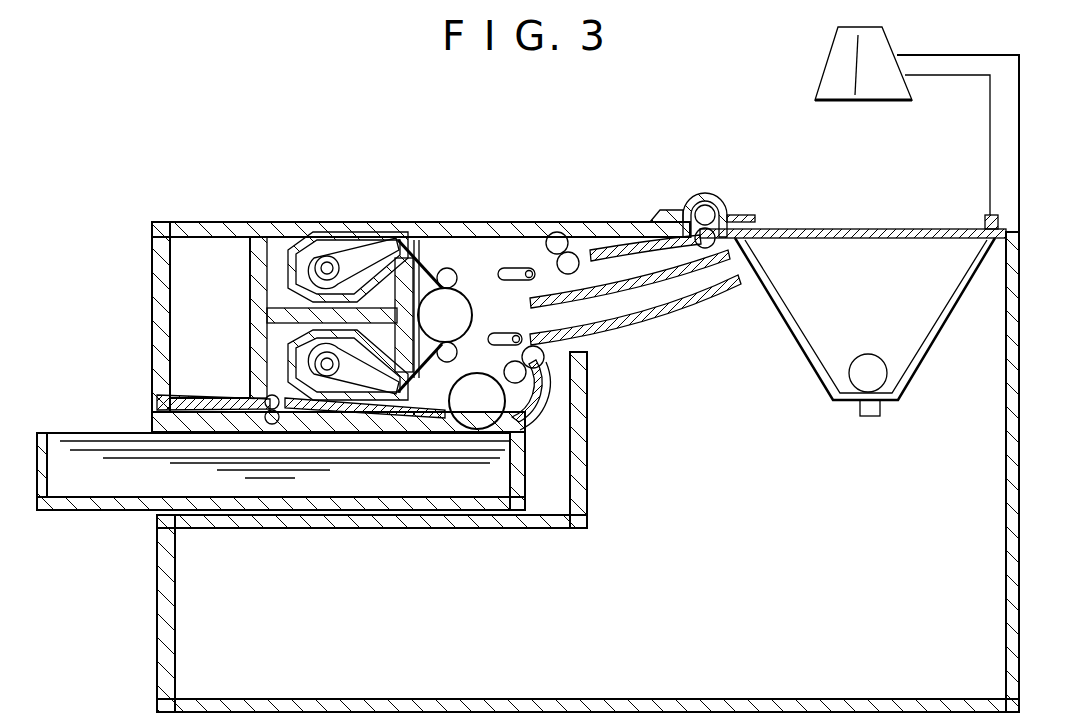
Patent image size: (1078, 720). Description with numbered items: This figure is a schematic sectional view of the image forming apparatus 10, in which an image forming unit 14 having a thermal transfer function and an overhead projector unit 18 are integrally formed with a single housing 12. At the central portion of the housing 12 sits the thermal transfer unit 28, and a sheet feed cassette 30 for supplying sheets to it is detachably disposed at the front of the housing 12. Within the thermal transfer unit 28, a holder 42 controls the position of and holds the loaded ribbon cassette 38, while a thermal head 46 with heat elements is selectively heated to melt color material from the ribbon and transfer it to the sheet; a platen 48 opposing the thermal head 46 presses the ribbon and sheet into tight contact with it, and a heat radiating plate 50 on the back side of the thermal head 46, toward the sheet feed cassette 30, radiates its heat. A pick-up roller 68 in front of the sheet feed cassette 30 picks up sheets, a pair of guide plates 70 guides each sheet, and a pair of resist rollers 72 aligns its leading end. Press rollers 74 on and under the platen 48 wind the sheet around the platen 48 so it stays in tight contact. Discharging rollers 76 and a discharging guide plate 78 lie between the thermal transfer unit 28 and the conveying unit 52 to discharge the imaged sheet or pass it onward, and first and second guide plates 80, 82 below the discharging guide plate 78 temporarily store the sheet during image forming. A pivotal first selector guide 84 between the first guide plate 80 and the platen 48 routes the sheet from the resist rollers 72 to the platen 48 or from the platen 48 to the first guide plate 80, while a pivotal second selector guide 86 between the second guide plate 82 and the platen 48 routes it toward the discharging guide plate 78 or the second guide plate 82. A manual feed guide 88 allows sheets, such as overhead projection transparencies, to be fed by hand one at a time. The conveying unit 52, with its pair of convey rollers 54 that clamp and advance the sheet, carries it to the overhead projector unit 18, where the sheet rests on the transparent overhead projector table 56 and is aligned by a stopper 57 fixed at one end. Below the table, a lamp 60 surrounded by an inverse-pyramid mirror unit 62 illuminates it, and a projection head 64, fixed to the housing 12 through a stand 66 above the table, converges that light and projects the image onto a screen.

The image forming apparatus 10 is at (292, 160).
The housing 12 is at (1022, 480).
The image forming unit 14 is at (500, 158).
The overhead projector unit 18 is at (797, 130).
The thermal transfer unit 28 is at (478, 254).
The sheet feed cassette 30 is at (125, 508).
The ribbon cassette 38 is at (285, 258).
The holder 42 is at (250, 332).
The thermal head 46 is at (403, 257).
The platen 48 is at (466, 312).
The heat radiating plate 50 is at (360, 247).
The conveying unit 52 is at (700, 196).
The convey rollers 54 is at (723, 232).
The overhead projector table 56 is at (830, 228).
The stopper 57 is at (985, 216).
The lamp 60 is at (873, 356).
The mirror unit 62 is at (783, 292).
The projection head 64 is at (898, 44).
The stand 66 is at (1020, 150).
The pick-up roller 68 is at (522, 445).
The guide plates 70 is at (553, 380).
The resist rollers 72 is at (528, 372).
The press rollers 74 is at (450, 270).
The discharging rollers 76 is at (560, 232).
The discharging guide plate 78 is at (617, 250).
The first guide plate 80 is at (670, 312).
The second guide plate 82 is at (628, 284).
The first selector guide 84 is at (500, 345).
The second selector guide 86 is at (502, 268).
The manual feed guide 88 is at (157, 425).